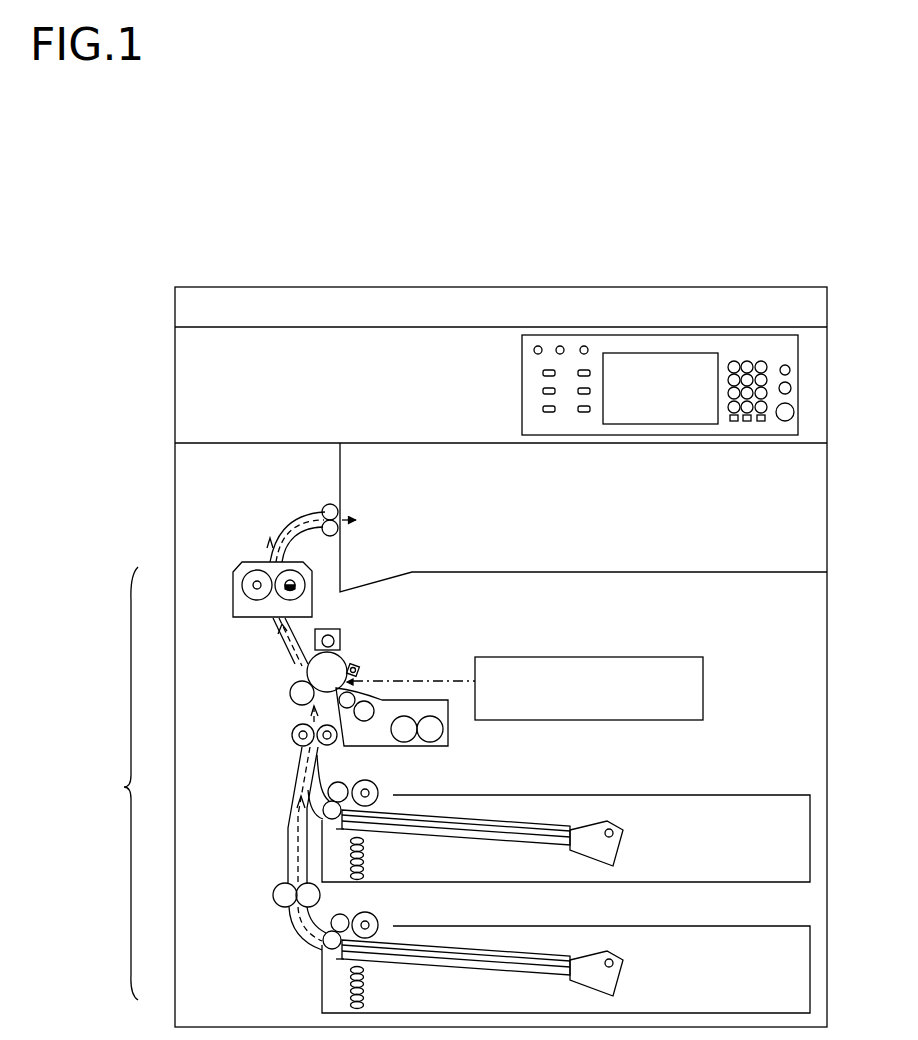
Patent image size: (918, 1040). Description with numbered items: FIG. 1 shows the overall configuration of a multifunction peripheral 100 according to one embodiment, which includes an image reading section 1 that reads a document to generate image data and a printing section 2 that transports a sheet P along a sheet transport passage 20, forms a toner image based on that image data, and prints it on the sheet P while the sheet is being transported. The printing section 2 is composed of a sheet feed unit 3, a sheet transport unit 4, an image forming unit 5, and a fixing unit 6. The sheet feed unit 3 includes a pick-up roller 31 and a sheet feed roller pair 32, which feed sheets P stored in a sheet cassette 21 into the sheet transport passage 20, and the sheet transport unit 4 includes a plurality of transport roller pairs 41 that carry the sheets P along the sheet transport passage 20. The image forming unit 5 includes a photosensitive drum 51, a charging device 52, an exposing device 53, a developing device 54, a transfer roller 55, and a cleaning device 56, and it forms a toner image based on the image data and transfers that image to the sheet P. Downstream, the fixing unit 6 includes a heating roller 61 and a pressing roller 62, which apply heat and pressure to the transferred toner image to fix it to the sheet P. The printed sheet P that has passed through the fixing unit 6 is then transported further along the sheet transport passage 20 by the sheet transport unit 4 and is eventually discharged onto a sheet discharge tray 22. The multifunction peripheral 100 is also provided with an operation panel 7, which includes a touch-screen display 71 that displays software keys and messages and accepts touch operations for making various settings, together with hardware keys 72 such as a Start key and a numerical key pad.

The multifunction peripheral 100 is at (196, 268).
The image reading section 1 is at (171, 361).
The printing section 2 is at (458, 733).
The sheet feed unit 3 is at (319, 971).
The sheet transport unit 4 is at (274, 884).
The image forming unit 5 is at (280, 700).
The fixing unit 6 is at (230, 599).
The operation panel 7 is at (519, 383).
The sheet transport passage 20 is at (292, 808).
The sheet cassette 21 is at (741, 795).
The sheet discharge tray 22 is at (653, 571).
The pick-up roller 31 is at (377, 790).
The sheet feed roller pair 32 is at (336, 795).
The transport roller pairs 41 is at (326, 505).
The photosensitive drum 51 is at (315, 670).
The charging device 52 is at (361, 672).
The exposing device 53 is at (576, 663).
The developing device 54 is at (448, 740).
The transfer roller 55 is at (297, 688).
The cleaning device 56 is at (340, 633).
The heating roller 61 is at (306, 586).
The pressing roller 62 is at (248, 580).
The touch-screen display 71 is at (620, 412).
The hardware keys 72 is at (785, 420).
The sheet P is at (518, 822).